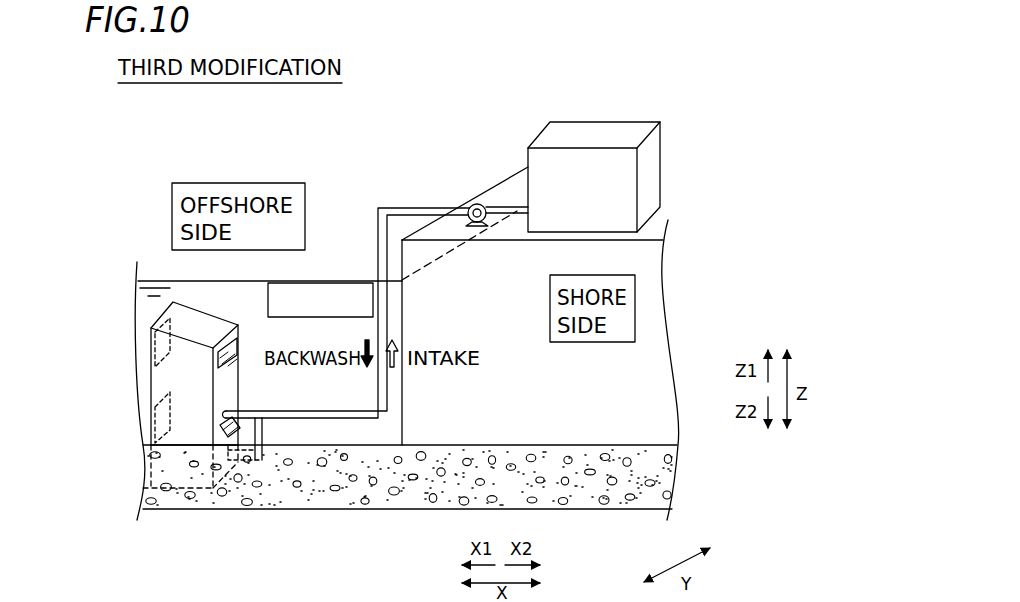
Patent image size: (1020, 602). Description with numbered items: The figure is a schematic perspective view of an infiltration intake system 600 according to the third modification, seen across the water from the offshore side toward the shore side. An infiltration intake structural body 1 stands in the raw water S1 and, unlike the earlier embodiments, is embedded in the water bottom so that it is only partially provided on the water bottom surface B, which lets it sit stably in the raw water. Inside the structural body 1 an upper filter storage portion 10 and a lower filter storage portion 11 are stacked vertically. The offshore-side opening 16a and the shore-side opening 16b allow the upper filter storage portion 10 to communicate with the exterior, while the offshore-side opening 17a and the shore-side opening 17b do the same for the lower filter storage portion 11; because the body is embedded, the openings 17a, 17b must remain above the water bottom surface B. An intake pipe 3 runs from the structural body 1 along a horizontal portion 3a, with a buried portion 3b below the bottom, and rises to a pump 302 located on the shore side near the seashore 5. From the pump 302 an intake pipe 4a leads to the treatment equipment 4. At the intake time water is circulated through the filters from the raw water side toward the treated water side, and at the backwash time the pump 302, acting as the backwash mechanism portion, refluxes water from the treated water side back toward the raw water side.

The infiltration intake system 600 is at (492, 124).
The infiltration intake structural body 1 is at (243, 314).
The upper filter storage portion 10 is at (189, 395).
The lower filter storage portion 11 is at (146, 456).
The offshore-side opening 16a is at (156, 329).
The shore-side opening 16b is at (238, 346).
The offshore-side opening 17a is at (159, 407).
The shore-side opening 17b is at (257, 431).
The intake pipe 3 is at (347, 313).
The horizontal pipe portion 3a is at (243, 413).
The buried pipe portion 3b is at (266, 440).
The water bottom surface B is at (340, 411).
The raw water / sea water S1 is at (342, 283).
The pump 302 is at (479, 226).
The treatment equipment 4 is at (612, 132).
The intake pipe 4a is at (520, 214).
The seashore 5 is at (476, 203).